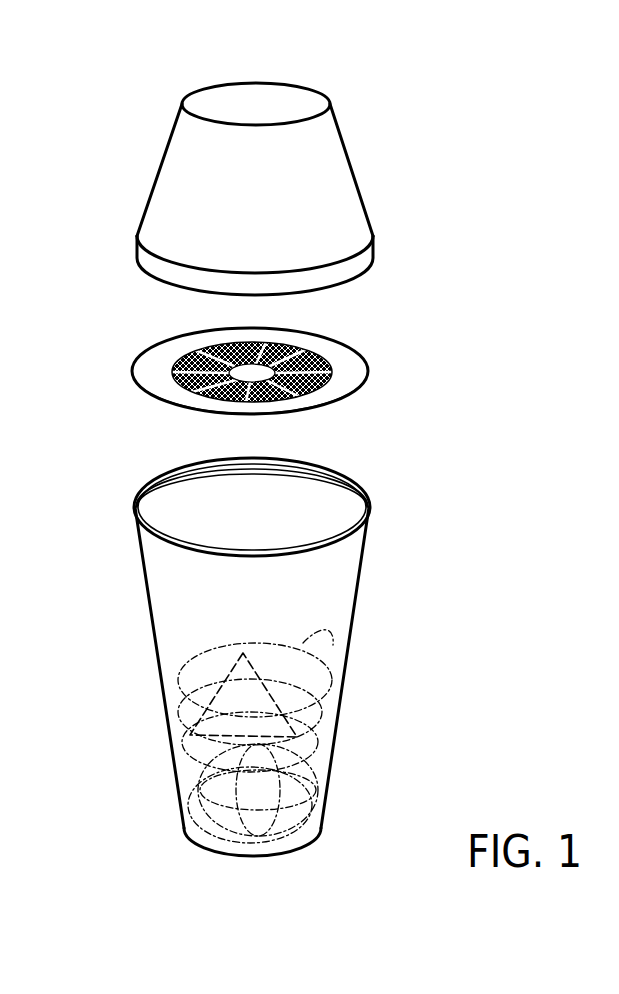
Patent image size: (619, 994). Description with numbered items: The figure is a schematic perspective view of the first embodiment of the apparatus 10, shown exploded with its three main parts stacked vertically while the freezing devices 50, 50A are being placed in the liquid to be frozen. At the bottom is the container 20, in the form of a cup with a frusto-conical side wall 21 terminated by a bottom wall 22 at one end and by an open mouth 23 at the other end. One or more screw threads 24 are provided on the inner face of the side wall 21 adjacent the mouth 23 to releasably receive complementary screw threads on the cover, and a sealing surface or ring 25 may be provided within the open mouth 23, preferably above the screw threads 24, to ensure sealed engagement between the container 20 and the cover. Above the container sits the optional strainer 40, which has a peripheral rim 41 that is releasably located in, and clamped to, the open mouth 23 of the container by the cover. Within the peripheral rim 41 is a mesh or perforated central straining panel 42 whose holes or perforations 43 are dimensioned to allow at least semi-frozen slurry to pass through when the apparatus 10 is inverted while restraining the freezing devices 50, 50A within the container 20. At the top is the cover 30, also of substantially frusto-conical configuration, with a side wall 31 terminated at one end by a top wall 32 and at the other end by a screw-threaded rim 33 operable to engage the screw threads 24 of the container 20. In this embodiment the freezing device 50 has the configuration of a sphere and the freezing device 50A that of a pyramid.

The apparatus 10 is at (391, 170).
The container 20 is at (146, 633).
The side wall 21 is at (362, 589).
The bottom wall 22 is at (203, 850).
The open mouth 23 is at (367, 486).
The screw threads 24 is at (322, 476).
The sealing surface or ring 25 is at (176, 470).
The cover 30 is at (200, 195).
The side wall 31 is at (343, 136).
The top wall 32 is at (279, 100).
The screw-threaded rim 33 is at (348, 267).
The strainer 40 is at (163, 408).
The peripheral rim 41 is at (172, 346).
The central straining panel 42 is at (320, 354).
The holes or perforations 43 is at (178, 369).
The freezing device 50 is at (218, 801).
The freezing device 50A is at (208, 726).